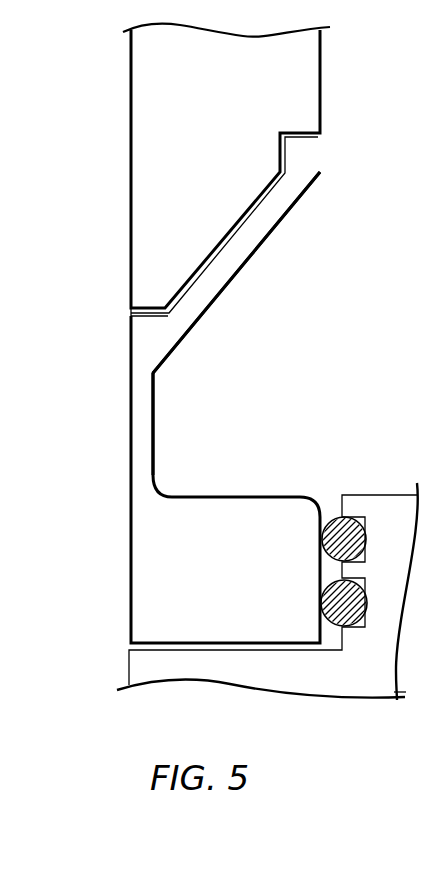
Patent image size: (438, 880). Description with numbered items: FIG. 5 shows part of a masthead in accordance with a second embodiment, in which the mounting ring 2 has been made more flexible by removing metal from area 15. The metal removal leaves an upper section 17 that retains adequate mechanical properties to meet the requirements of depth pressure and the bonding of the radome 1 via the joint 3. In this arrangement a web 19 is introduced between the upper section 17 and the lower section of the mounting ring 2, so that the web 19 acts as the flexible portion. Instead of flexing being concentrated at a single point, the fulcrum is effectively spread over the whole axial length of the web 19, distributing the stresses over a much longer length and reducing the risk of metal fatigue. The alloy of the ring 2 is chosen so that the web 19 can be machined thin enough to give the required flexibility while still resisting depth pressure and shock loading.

The radome 1 is at (153, 132).
The mounting ring 2 is at (143, 587).
The joint 3 is at (228, 232).
The area 15 is at (182, 445).
The section 17 is at (185, 310).
The web 19 is at (145, 403).